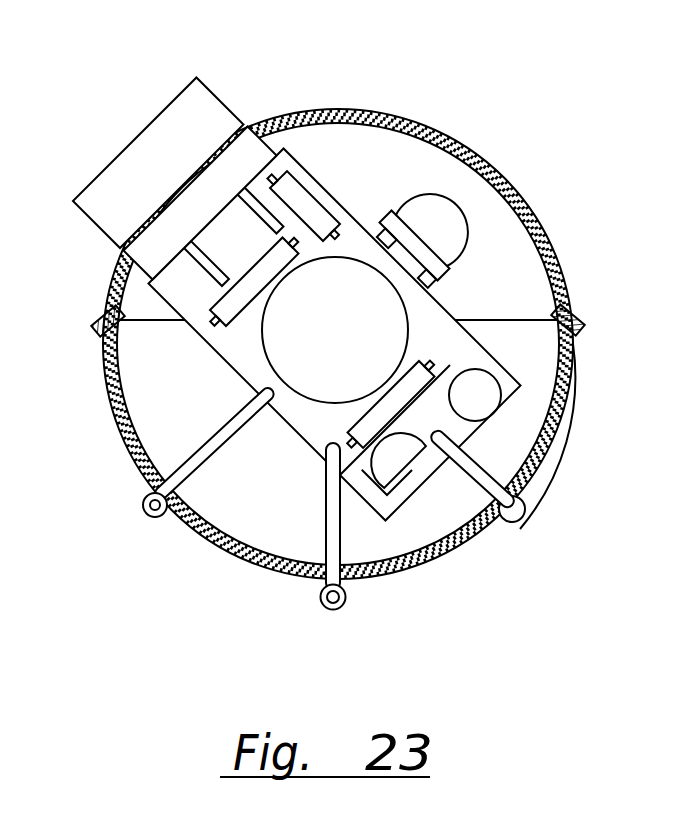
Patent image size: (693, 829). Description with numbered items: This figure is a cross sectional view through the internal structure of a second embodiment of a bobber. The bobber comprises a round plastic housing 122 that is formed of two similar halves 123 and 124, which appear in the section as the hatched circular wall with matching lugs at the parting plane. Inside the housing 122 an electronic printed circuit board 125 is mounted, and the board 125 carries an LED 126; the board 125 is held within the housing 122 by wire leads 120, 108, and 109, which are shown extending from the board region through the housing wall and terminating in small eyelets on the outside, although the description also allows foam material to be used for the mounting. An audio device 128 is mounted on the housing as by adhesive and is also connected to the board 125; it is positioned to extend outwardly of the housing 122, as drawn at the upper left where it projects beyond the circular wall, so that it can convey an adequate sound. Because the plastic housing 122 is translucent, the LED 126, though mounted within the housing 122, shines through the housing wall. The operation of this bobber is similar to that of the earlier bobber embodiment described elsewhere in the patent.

The wire lead 108 is at (293, 568).
The wire lead 109 is at (468, 488).
The wire lead 120 is at (200, 480).
The round plastic housing 122 is at (548, 225).
The housing half 123 is at (490, 150).
The housing half 124 is at (568, 418).
The electronic printed circuit board 125 is at (523, 378).
The LED 126 is at (473, 223).
The audio device 128 is at (212, 83).